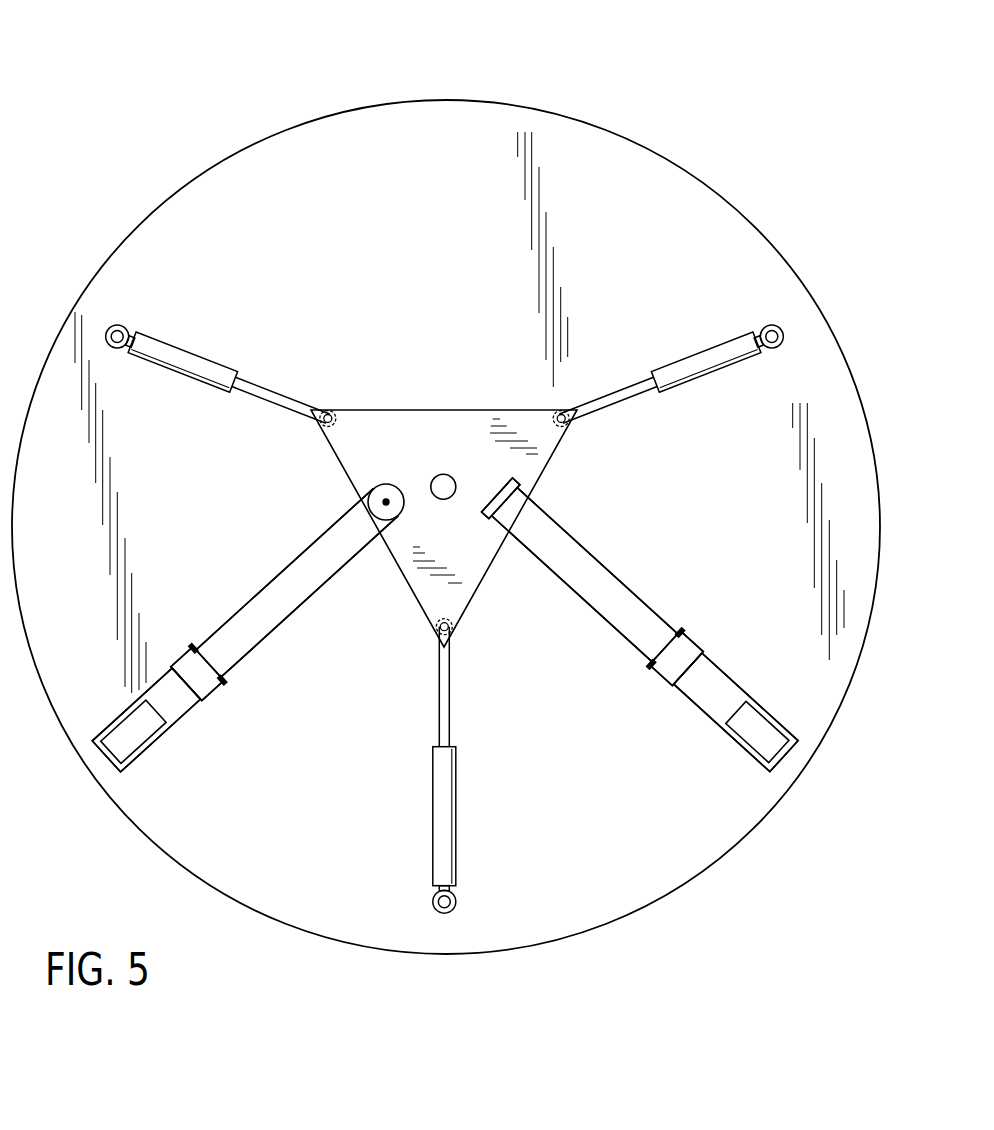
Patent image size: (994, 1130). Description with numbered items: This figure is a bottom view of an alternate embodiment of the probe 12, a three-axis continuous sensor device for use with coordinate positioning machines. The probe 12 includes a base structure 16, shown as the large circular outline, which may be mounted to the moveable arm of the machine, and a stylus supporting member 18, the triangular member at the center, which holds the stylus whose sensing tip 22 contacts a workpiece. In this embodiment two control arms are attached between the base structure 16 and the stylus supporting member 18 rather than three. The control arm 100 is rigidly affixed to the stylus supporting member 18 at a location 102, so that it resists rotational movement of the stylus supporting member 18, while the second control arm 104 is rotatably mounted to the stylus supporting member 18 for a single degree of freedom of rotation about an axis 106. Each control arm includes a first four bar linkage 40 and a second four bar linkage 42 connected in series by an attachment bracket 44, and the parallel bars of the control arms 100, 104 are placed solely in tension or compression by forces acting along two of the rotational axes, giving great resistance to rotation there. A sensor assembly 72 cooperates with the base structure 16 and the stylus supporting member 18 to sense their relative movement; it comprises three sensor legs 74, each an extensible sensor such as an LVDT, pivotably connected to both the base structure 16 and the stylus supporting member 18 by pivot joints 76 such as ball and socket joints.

The probe 12 is at (446, 486).
The base structure 16 is at (682, 207).
The stylus supporting member 18 is at (468, 428).
The sensing tip 22 is at (438, 484).
The first four bar linkage 40 is at (182, 704).
The second four bar linkage 42 is at (338, 568).
The attachment bracket 44 is at (219, 690).
The sensor assembly 72 is at (238, 305).
The sensor leg 74 is at (186, 366).
The pivot joint 76 is at (121, 324).
The control arm 100 is at (640, 573).
The location 102 is at (524, 487).
The second control arm 104 is at (248, 573).
The axis 106 is at (369, 489).